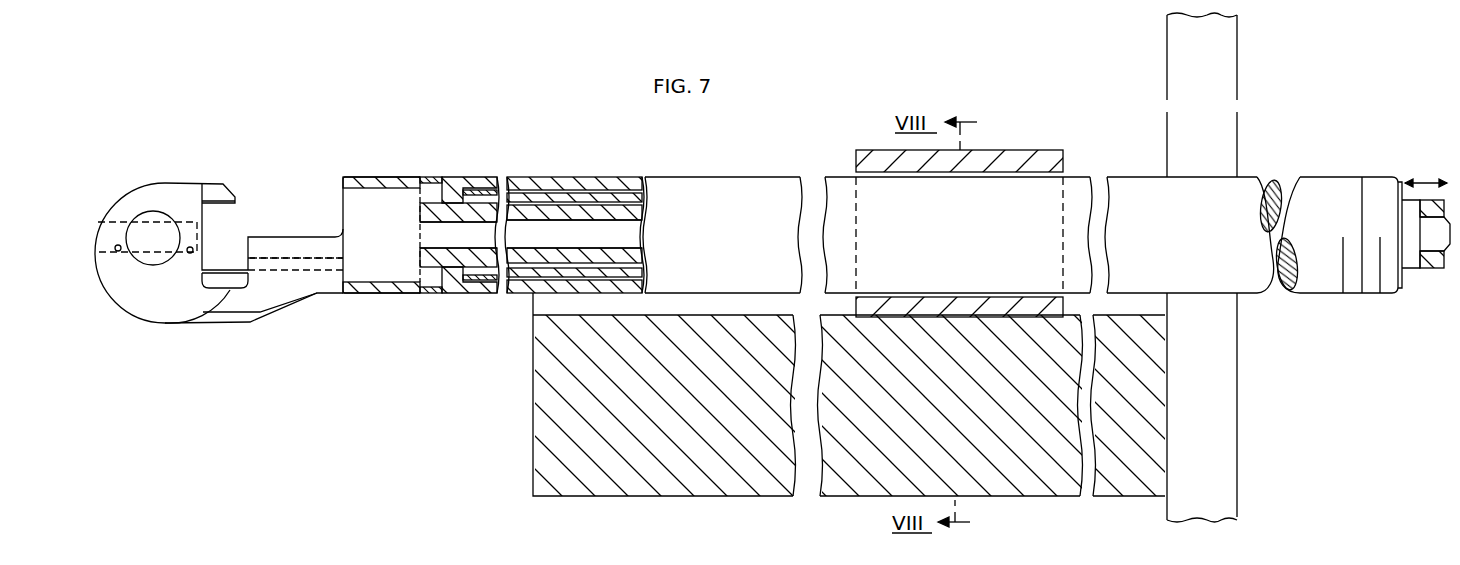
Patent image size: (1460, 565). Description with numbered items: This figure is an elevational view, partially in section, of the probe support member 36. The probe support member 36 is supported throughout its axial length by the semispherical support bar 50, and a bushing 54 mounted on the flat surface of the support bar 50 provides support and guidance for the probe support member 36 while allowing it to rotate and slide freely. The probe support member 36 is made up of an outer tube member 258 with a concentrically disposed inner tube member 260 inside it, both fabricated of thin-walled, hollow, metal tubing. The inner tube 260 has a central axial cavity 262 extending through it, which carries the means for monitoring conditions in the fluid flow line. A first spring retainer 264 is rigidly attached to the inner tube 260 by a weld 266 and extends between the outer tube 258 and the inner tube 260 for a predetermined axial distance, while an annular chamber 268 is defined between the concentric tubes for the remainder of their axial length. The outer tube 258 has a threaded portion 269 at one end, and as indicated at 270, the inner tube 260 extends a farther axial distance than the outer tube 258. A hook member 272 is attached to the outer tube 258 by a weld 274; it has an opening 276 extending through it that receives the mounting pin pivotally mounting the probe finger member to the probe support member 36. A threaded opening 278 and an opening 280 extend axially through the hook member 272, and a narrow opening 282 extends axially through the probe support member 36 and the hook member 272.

The probe support member 36 is at (838, 175).
The semispherical support bar 50 is at (967, 411).
The bushing 54 is at (1013, 160).
The outer tube member 258 is at (533, 182).
The inner tube member 260 is at (628, 234).
The central axial cavity 262 is at (630, 218).
The first spring retainer 264 is at (473, 195).
The weld 266 is at (430, 177).
The annular chamber 268 is at (573, 192).
The threaded portion 269 is at (1350, 293).
The extension of inner tube beyond outer tube 270 is at (1428, 180).
The hook member 272 is at (278, 313).
The weld 274 is at (346, 295).
The opening 276 is at (152, 211).
The threaded opening 278 is at (121, 262).
The opening 280 is at (188, 253).
The narrow opening 282 is at (280, 268).